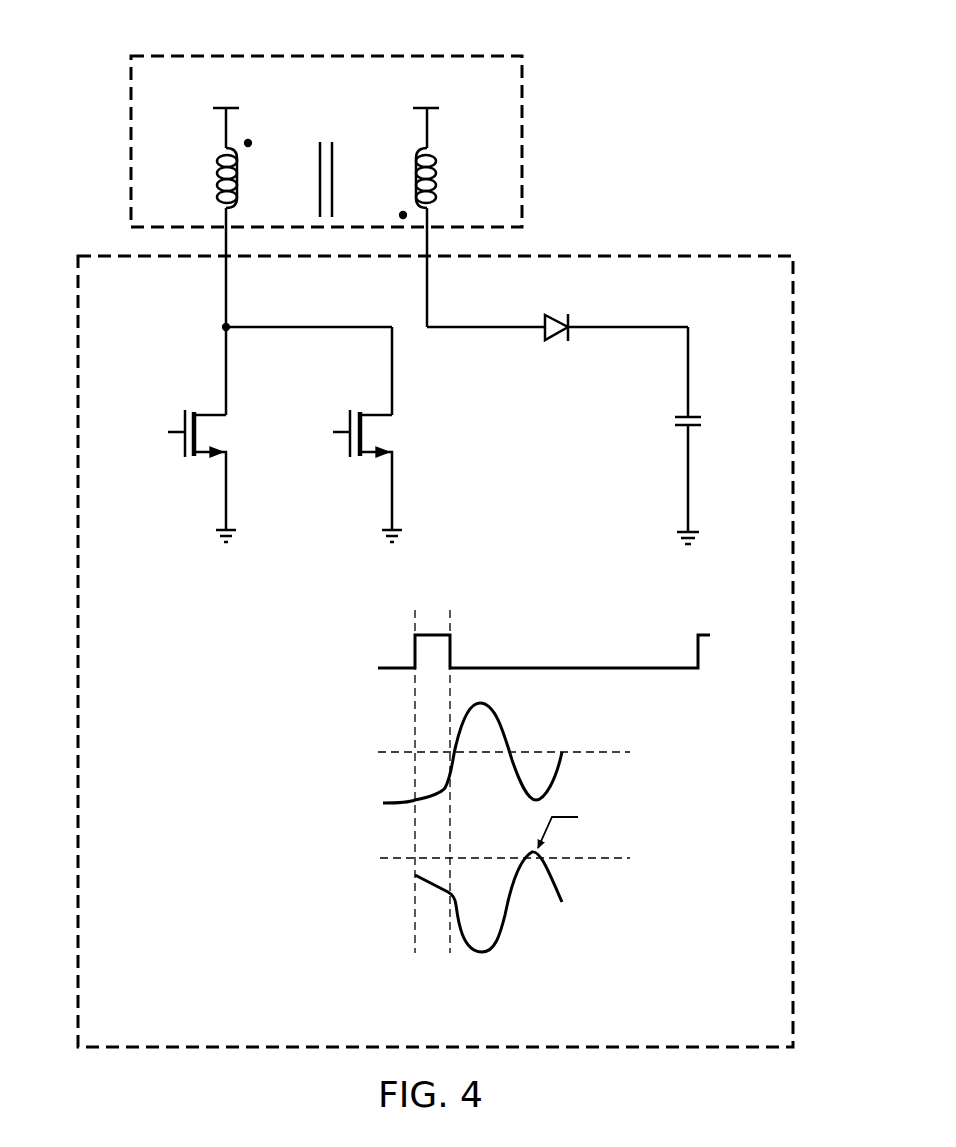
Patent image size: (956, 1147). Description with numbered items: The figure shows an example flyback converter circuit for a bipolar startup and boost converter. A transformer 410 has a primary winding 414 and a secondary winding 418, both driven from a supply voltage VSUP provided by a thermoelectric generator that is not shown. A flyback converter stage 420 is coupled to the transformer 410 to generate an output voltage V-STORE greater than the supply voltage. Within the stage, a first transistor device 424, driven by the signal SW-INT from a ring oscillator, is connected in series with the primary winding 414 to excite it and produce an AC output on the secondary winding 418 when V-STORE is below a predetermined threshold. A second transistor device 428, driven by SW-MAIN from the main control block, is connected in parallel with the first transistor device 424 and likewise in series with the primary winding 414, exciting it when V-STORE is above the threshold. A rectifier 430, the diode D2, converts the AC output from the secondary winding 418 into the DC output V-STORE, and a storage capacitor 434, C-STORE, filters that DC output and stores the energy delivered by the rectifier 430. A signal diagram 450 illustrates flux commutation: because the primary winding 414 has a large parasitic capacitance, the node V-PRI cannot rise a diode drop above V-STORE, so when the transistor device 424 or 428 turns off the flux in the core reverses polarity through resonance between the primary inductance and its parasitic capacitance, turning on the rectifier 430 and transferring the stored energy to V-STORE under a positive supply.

The transformer 410 is at (283, 53).
The primary winding 414 is at (218, 182).
The secondary winding 418 is at (436, 182).
The flyback converter stage 420 is at (678, 252).
The first transistor device 424 is at (176, 449).
The second transistor device 428 is at (341, 449).
The rectifier 430 is at (555, 333).
The storage capacitor 434 is at (702, 420).
The signal diagram 450 is at (618, 614).